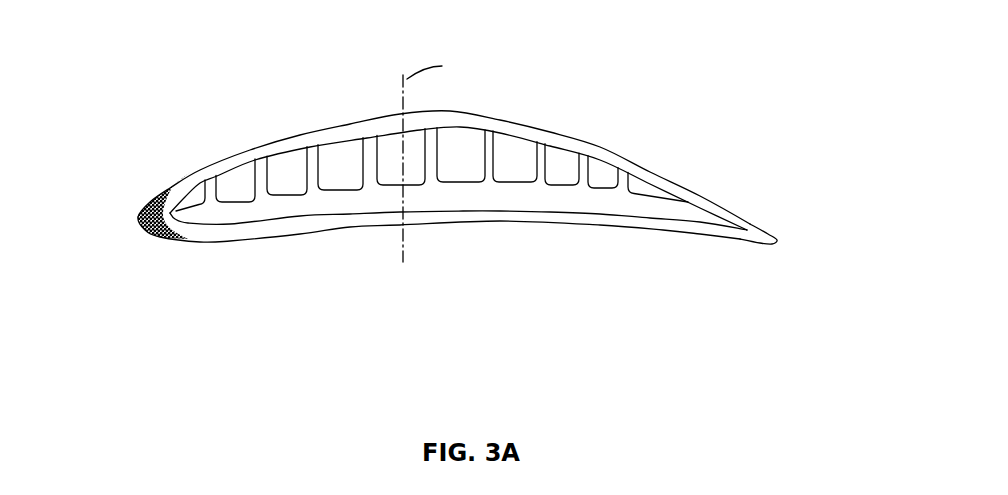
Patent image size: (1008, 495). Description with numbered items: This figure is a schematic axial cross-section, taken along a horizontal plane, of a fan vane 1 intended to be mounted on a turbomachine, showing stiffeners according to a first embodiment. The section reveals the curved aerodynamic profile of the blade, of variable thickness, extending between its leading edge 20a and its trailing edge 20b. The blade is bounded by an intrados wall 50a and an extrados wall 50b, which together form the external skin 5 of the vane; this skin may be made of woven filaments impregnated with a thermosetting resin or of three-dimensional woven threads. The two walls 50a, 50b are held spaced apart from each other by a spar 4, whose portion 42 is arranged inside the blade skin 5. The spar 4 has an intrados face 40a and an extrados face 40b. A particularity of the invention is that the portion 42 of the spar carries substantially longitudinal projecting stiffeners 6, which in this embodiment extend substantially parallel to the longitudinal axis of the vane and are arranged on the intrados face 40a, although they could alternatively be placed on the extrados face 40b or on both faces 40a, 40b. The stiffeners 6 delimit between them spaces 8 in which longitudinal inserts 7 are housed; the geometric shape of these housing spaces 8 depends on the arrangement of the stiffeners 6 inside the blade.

The fan vane 1 is at (787, 137).
The spar 4 is at (517, 200).
The external skin 5 is at (592, 137).
The stiffeners 6 is at (303, 166).
The longitudinal inserts 7 is at (523, 157).
The housing spaces 8 is at (538, 154).
The leading edge 20a is at (140, 215).
The trailing edge 20b is at (778, 240).
The intrados face 40a is at (463, 213).
The extrados face 40b is at (368, 137).
The spar portion 42 is at (325, 205).
The intrados wall 50a is at (663, 232).
The extrados wall 50b is at (628, 158).